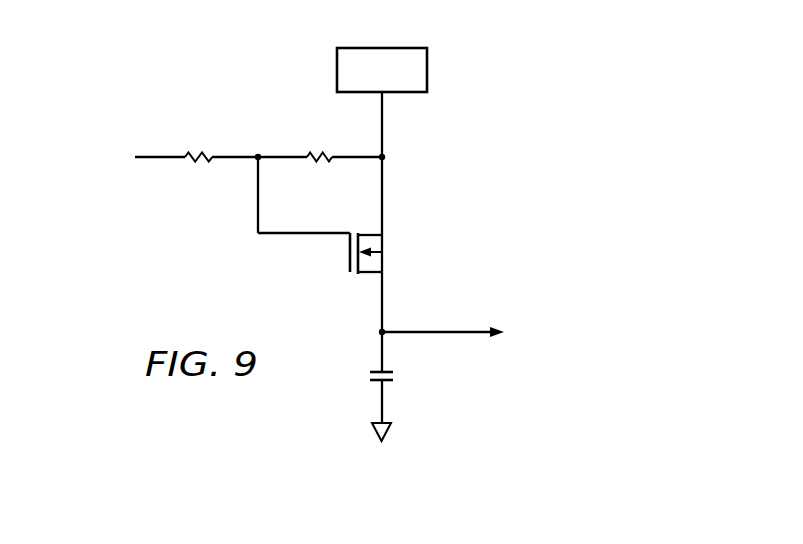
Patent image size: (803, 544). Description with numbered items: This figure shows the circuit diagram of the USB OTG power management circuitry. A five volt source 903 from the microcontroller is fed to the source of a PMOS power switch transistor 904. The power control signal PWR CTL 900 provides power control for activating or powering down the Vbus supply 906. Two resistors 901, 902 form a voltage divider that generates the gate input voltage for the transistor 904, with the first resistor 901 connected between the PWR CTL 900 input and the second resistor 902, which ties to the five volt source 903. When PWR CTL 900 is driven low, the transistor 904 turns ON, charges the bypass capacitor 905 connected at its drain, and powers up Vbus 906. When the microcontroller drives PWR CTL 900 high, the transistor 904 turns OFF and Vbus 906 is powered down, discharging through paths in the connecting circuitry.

The PWR CTL 900 is at (155, 157).
The resistor 901 is at (195, 162).
The resistor 902 is at (318, 165).
The 5.0 volts source 903 is at (428, 68).
The PMOS power switch transistor 904 is at (350, 262).
The bypass capacitor 905 is at (368, 377).
The Vbus supply 906 is at (442, 332).